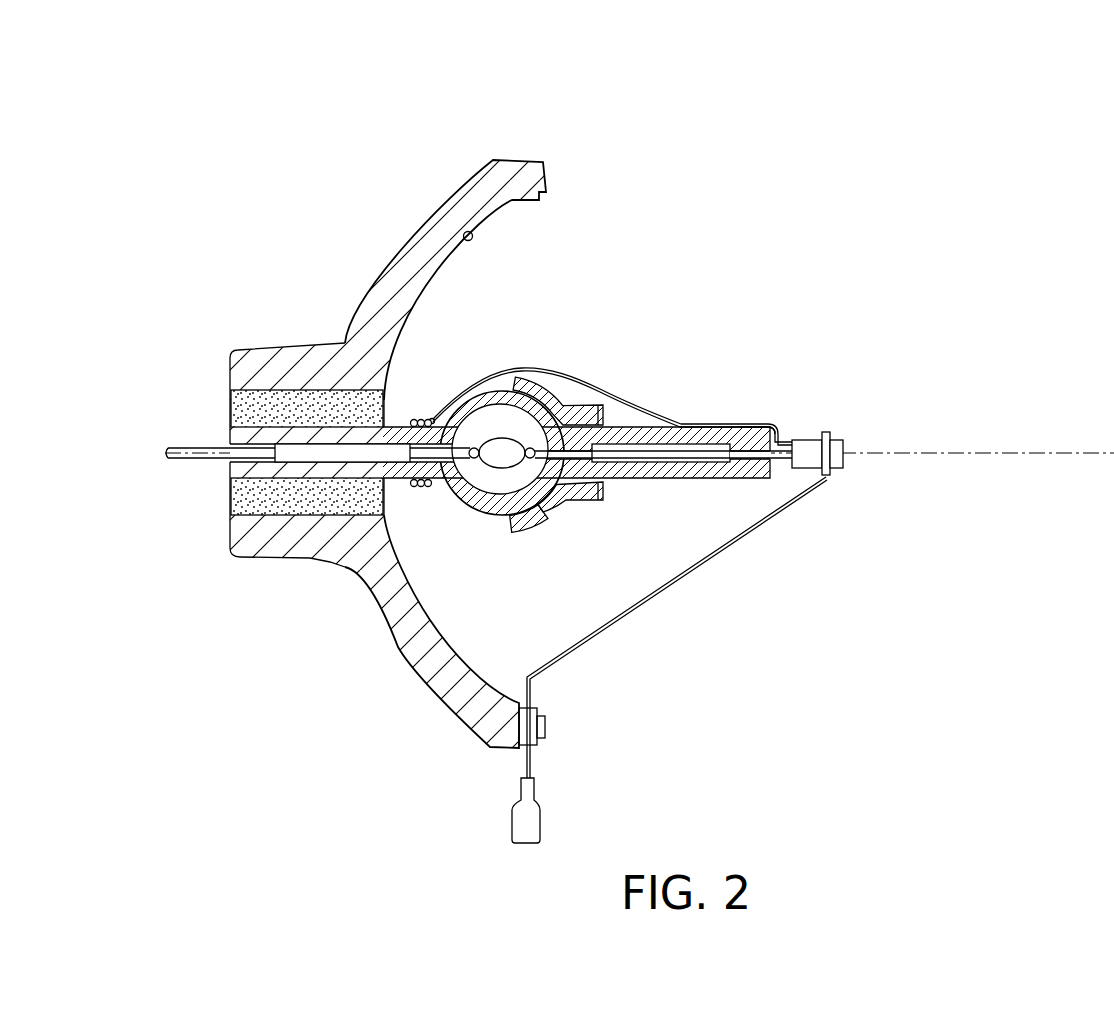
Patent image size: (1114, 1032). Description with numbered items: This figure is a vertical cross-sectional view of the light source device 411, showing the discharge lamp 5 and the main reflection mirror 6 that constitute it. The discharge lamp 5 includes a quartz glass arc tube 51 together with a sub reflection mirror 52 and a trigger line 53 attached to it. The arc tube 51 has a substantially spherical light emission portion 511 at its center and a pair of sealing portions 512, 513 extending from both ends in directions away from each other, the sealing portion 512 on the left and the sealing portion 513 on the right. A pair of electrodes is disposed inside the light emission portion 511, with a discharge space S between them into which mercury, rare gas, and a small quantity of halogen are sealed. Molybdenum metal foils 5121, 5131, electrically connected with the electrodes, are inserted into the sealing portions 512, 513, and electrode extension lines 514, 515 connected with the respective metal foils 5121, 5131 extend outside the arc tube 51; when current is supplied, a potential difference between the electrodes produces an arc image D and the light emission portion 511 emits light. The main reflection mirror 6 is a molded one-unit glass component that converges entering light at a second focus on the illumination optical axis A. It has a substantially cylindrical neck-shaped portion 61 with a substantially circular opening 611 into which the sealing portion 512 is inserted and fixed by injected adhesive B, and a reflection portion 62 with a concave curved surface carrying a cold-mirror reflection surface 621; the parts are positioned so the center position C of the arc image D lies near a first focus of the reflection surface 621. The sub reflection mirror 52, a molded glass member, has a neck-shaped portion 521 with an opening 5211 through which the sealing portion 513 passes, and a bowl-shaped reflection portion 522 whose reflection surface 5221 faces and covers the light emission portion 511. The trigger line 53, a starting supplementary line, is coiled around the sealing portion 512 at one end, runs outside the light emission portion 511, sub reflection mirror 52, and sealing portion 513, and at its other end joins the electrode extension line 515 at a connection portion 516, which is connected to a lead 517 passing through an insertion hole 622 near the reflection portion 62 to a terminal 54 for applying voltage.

The light source device 411 is at (952, 126).
The discharge lamp 5 is at (643, 247).
The arc tube 51 is at (743, 427).
The light emission portion 511 is at (512, 405).
The sealing portion 512 is at (230, 467).
The metal foil 5121 is at (297, 467).
The sealing portion 513 is at (753, 480).
The metal foil 5131 is at (697, 448).
The electrode extension line 514 is at (197, 442).
The electrode extension line 515 is at (778, 460).
The connection portion 516 is at (806, 442).
The lead 517 is at (668, 585).
The sub reflection mirror 52 is at (548, 516).
The neck-shaped portion 521 is at (596, 394).
The opening 5211 is at (622, 482).
The reflection portion 522 is at (524, 534).
The reflection surface 5221 is at (540, 534).
The trigger line 53 is at (757, 424).
The terminal 54 is at (538, 822).
The main reflection mirror 6 is at (521, 188).
The neck-shaped portion 61 is at (257, 358).
The opening 611 is at (300, 400).
The reflection portion 62 is at (489, 178).
The reflection surface 621 is at (462, 232).
The insertion hole 622 is at (540, 730).
The illumination optical axis A is at (1080, 440).
The adhesive B is at (230, 503).
The center position C is at (498, 440).
The arc image D is at (470, 476).
The discharge space S is at (447, 488).